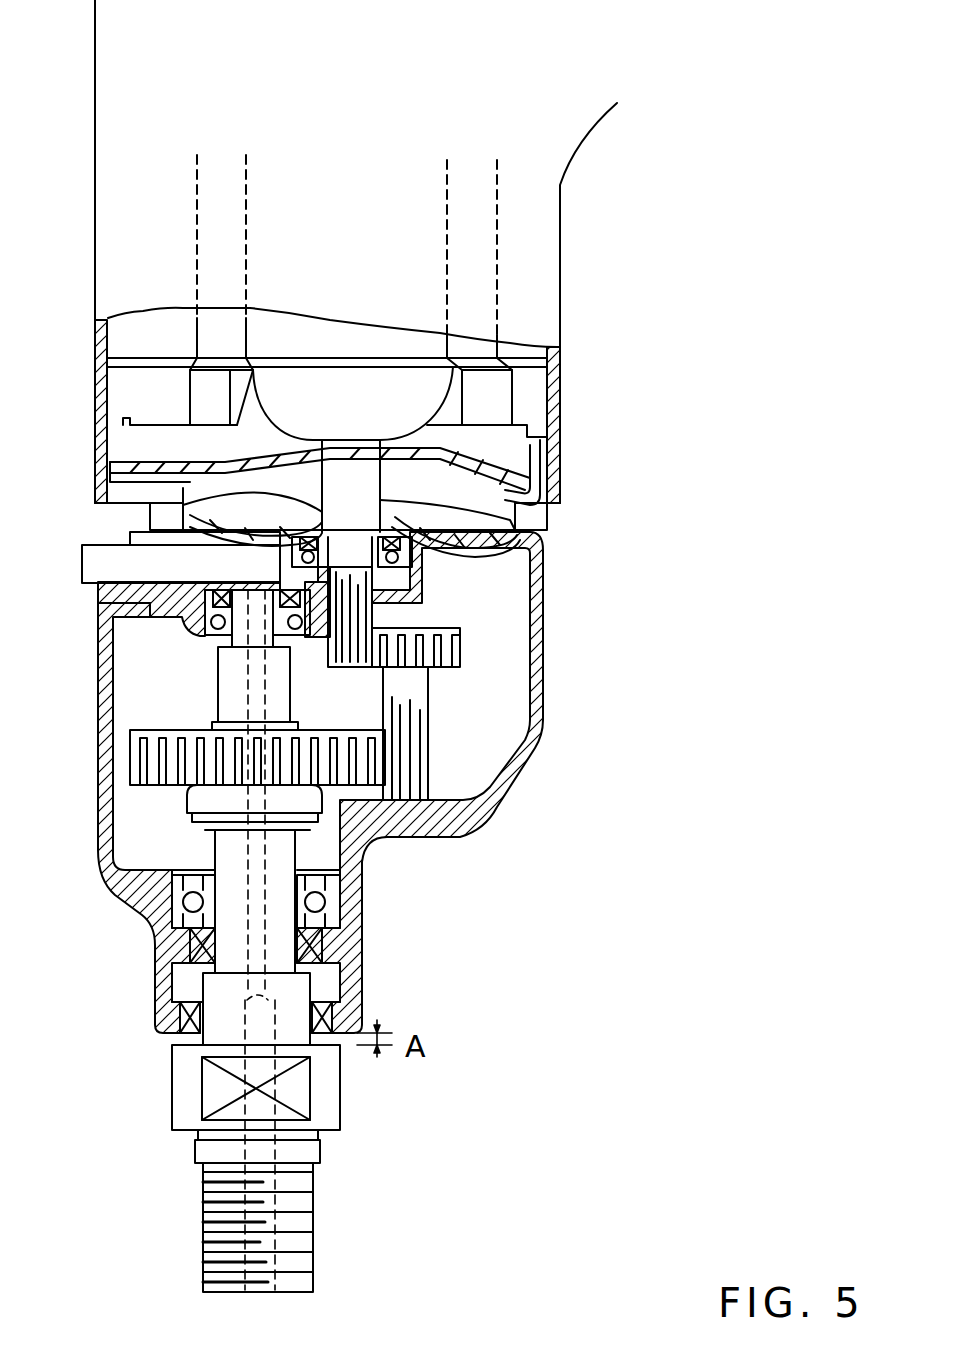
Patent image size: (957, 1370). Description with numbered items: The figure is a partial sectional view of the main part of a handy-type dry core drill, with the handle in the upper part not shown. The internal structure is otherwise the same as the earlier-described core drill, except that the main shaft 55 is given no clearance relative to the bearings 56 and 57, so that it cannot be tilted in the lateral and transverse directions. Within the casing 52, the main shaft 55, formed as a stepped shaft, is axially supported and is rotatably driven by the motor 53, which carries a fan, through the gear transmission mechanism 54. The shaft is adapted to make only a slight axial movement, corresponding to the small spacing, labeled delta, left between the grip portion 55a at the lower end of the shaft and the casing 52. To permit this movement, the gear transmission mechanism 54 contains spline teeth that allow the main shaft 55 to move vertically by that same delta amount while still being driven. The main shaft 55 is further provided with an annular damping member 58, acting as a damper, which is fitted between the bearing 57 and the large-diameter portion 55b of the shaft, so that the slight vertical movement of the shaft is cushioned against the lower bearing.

The casing 52 is at (362, 965).
The motor 53 is at (265, 338).
The gear transmission mechanism 54 is at (433, 703).
The main shaft 55 is at (230, 853).
The grip portion 55a is at (190, 1102).
The large-diameter portion 55b is at (223, 993).
The bearing 56 is at (208, 638).
The bearing 57 is at (340, 897).
The annular damping member 58 is at (155, 937).